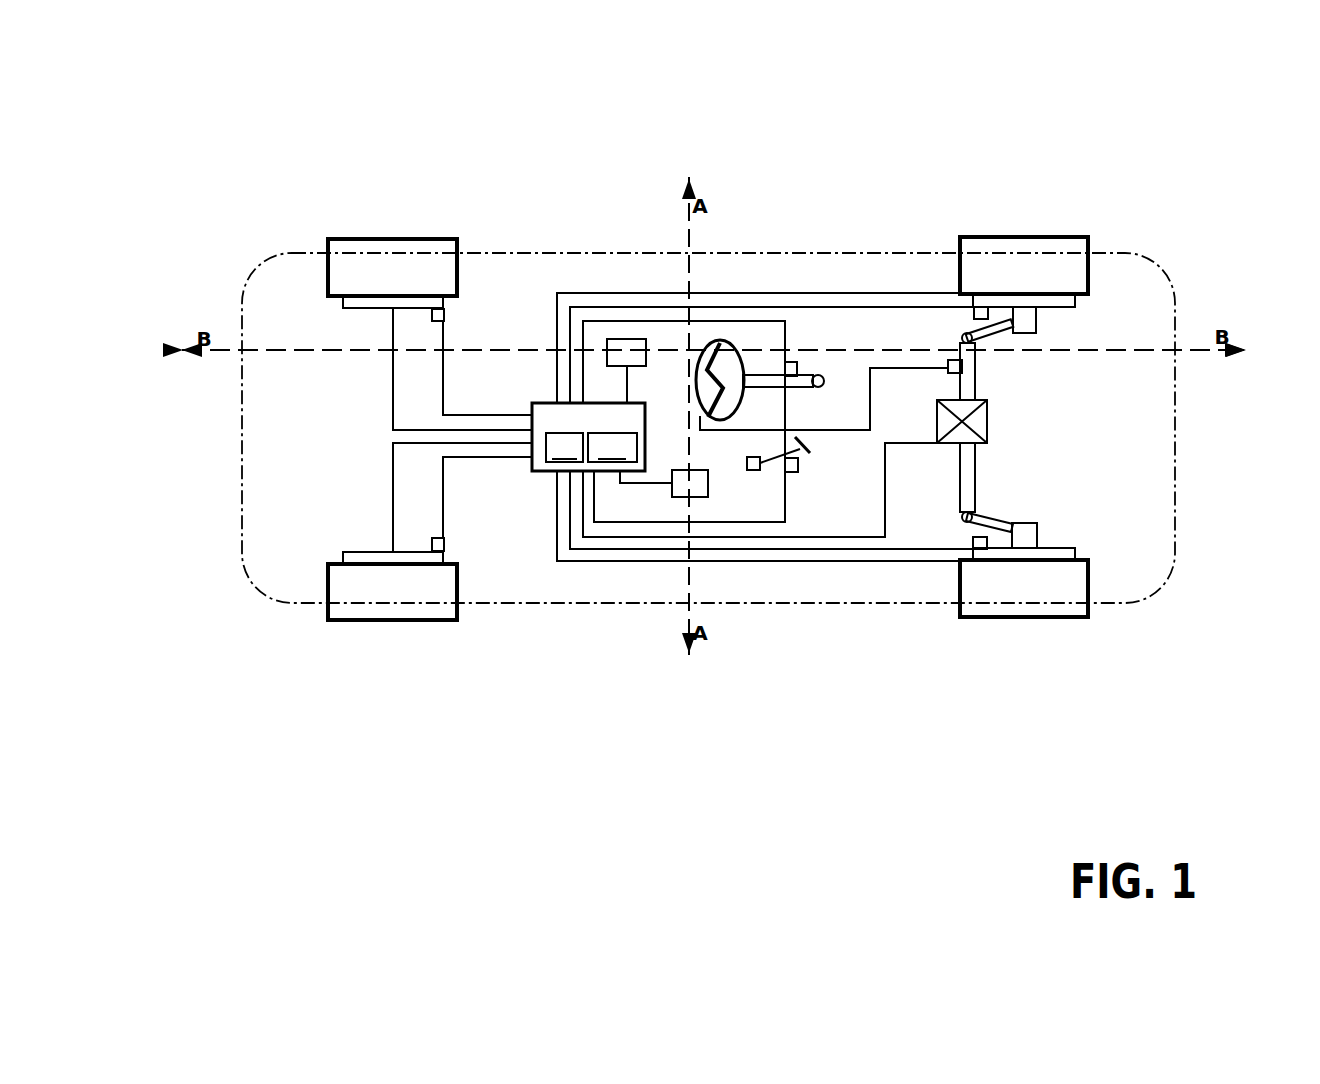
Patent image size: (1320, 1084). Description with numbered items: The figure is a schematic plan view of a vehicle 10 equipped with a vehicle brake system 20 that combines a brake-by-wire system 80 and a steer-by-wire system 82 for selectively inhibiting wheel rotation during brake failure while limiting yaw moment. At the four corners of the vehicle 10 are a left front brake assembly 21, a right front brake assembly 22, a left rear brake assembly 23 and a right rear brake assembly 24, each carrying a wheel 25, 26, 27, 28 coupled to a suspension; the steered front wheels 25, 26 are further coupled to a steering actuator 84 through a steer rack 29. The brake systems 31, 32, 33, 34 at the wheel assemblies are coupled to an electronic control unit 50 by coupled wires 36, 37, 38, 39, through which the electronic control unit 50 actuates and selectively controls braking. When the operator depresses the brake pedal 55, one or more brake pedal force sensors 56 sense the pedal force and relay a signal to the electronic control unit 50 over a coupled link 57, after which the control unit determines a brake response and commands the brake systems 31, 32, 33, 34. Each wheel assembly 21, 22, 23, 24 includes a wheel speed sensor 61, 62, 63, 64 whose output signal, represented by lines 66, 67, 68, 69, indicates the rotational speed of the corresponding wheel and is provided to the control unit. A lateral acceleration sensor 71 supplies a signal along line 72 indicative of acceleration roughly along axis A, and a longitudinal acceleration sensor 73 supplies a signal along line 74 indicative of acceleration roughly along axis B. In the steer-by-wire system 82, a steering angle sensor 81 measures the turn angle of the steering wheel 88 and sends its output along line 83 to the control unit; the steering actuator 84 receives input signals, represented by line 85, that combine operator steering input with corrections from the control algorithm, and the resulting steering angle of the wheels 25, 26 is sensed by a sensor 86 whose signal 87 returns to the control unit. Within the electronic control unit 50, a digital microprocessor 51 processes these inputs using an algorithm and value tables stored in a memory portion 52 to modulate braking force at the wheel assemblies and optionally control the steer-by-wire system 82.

The vehicle 10 is at (915, 170).
The vehicle brake system 20 is at (521, 300).
The left front brake assembly 21 is at (1105, 298).
The right front brake assembly 22 is at (1110, 560).
The left rear brake assembly 23 is at (305, 295).
The right rear brake assembly 24 is at (308, 572).
The wheel 25 is at (993, 245).
The wheel 26 is at (990, 607).
The wheel 27 is at (350, 246).
The wheel 28 is at (355, 608).
The steer rack 29 is at (977, 477).
The brake system 31 is at (1073, 302).
The brake system 32 is at (1075, 550).
The brake system 33 is at (340, 302).
The brake system 34 is at (342, 553).
The coupled wire 36 is at (908, 293).
The coupled wire 37 is at (818, 563).
The coupled wire 38 is at (393, 365).
The coupled wire 39 is at (393, 477).
The electronic control unit 50 is at (577, 466).
The digital microprocessor 51 is at (564, 447).
The memory portion 52 is at (612, 447).
The brake pedal 55 is at (808, 450).
The brake pedal force sensor 56 is at (795, 473).
The coupled link 57 is at (757, 522).
The wheel speed sensor 61 is at (975, 314).
The wheel speed sensor 62 is at (973, 538).
The wheel speed sensor 63 is at (445, 316).
The wheel speed sensor 64 is at (445, 545).
The output signal line 66 is at (858, 305).
The output signal line 67 is at (803, 552).
The output signal line 68 is at (445, 378).
The output signal line 69 is at (445, 471).
The lateral acceleration sensor 71 is at (672, 495).
The output signal line 72 is at (648, 483).
The longitudinal acceleration sensor 73 is at (617, 368).
The output signal line 74 is at (630, 386).
The brake-by-wire system 80 is at (520, 573).
The steering angle sensor 81 is at (824, 381).
The steer-by-wire system 82 is at (1002, 443).
The output signal line 83 is at (766, 318).
The steering actuator 84 is at (988, 413).
The input signal line 85 is at (870, 540).
The wheel steering angle sensor 86 is at (948, 372).
The signal line 87 is at (825, 427).
The steering wheel 88 is at (720, 340).